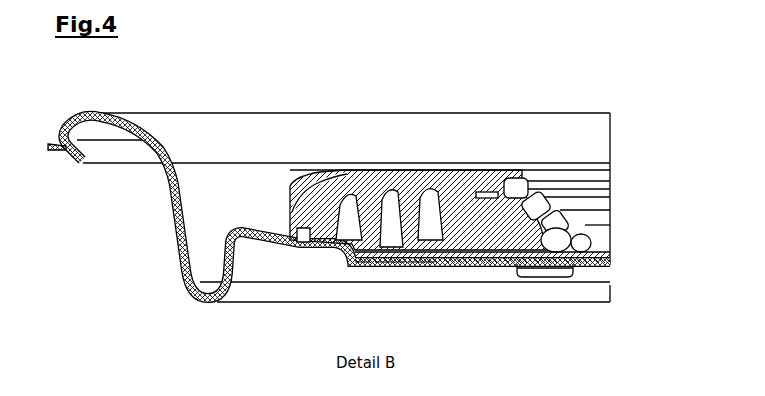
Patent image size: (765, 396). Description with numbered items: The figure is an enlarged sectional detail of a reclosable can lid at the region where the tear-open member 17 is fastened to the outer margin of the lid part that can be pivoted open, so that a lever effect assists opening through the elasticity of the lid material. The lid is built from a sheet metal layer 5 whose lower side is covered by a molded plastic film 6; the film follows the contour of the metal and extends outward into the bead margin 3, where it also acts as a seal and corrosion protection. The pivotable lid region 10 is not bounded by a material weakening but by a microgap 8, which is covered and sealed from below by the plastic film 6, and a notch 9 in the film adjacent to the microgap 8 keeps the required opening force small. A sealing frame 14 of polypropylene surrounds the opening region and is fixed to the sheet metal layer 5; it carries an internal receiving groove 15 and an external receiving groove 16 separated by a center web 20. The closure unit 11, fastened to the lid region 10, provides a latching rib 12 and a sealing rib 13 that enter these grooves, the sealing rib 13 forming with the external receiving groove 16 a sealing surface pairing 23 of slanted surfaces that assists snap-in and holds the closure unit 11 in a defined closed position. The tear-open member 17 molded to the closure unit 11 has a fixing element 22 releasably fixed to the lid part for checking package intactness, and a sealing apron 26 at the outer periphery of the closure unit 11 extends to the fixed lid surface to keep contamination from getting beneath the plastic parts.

The bead margin 3 is at (95, 114).
The sheet metal layer 5 is at (397, 267).
The plastic film 6 is at (440, 265).
The microgap 8 is at (467, 263).
The notch 9 is at (477, 260).
The lid region that can be pivoted open 10 is at (522, 172).
The closure unit 11 is at (461, 192).
The latching rib 12 is at (360, 172).
The sealing rib 13 is at (410, 172).
The sealing frame 14 is at (383, 267).
The internal receiving groove 15 is at (415, 263).
The external receiving groove 16 is at (362, 265).
The tear-open member 17 is at (492, 193).
The center web 20 is at (386, 172).
The fixing element 22 is at (510, 192).
The sealing surface pairing 23 is at (427, 267).
The sealing apron 26 is at (290, 195).